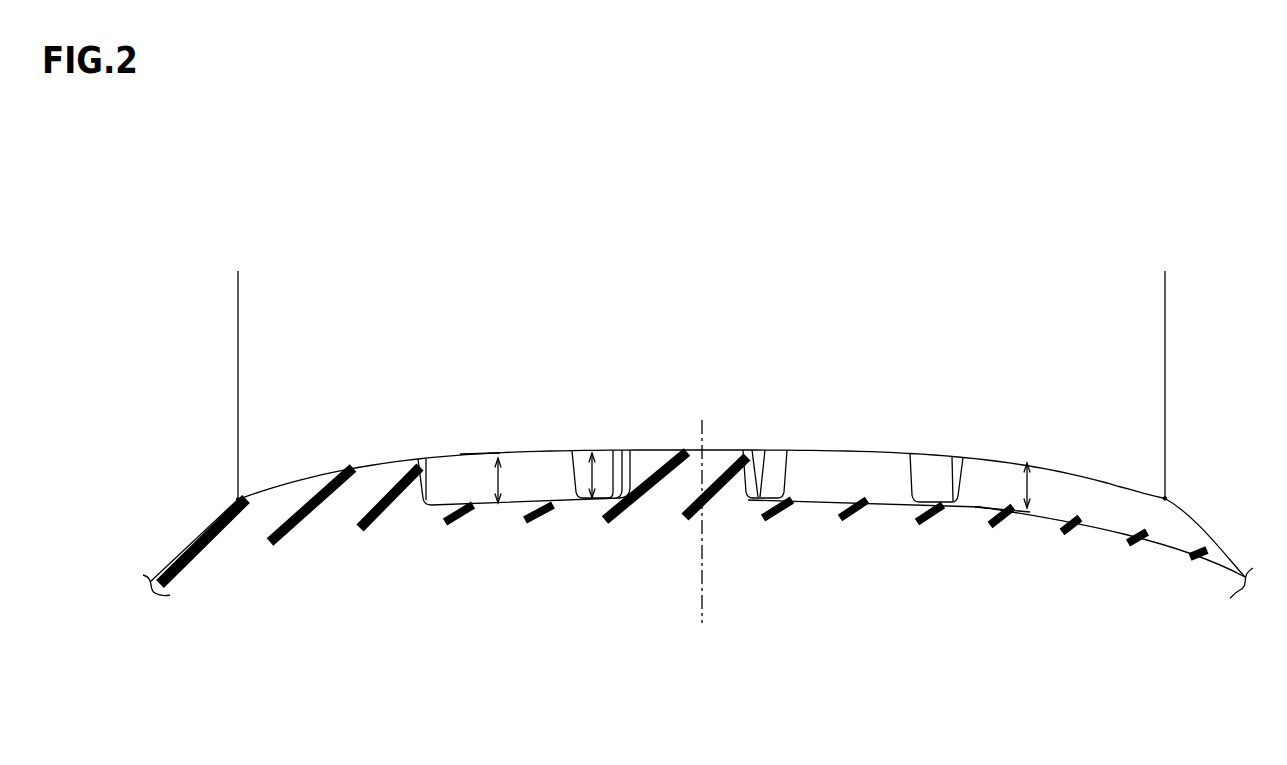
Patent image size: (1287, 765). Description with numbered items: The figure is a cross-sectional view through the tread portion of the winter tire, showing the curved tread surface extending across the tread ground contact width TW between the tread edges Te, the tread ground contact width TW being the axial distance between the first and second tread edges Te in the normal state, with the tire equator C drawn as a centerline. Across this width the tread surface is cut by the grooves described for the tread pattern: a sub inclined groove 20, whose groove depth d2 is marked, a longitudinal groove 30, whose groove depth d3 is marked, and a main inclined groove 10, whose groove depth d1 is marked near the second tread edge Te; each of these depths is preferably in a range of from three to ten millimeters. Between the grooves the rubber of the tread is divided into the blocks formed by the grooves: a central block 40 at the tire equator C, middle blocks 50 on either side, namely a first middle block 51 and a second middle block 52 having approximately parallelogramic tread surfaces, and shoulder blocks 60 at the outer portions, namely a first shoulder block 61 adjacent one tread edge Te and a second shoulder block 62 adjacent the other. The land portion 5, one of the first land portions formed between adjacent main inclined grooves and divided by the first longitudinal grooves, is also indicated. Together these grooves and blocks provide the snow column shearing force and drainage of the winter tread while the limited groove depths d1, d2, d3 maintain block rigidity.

The tread edge Te is at (238, 500).
The tread ground contact width TW is at (1165, 271).
The tire equator / center line C is at (703, 505).
The shoulder blocks 60 is at (701, 410).
The first shoulder blocks 61 is at (362, 463).
The second shoulder blocks 62 is at (1052, 467).
The sub inclined grooves 20 is at (463, 485).
The longitudinal grooves 30 is at (580, 478).
The central blocks 40 is at (687, 450).
The middle blocks 50 is at (653, 406).
The first middle blocks 51 is at (478, 455).
The second middle blocks 52 is at (812, 452).
The land portion 5 is at (918, 453).
The main inclined grooves 10 is at (1000, 485).
The groove depth of the main inclined grooves d1 is at (1027, 488).
The groove depth of the sub inclined grooves d2 is at (500, 478).
The groove depth of the longitudinal grooves d3 is at (594, 475).